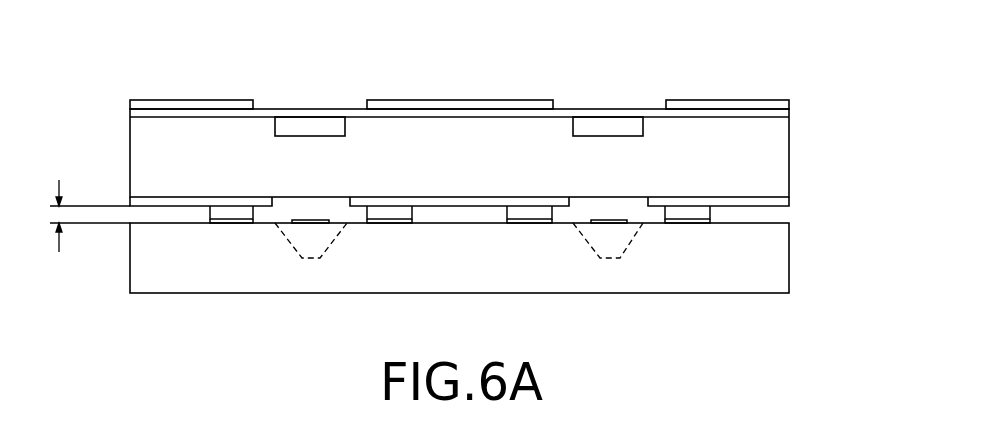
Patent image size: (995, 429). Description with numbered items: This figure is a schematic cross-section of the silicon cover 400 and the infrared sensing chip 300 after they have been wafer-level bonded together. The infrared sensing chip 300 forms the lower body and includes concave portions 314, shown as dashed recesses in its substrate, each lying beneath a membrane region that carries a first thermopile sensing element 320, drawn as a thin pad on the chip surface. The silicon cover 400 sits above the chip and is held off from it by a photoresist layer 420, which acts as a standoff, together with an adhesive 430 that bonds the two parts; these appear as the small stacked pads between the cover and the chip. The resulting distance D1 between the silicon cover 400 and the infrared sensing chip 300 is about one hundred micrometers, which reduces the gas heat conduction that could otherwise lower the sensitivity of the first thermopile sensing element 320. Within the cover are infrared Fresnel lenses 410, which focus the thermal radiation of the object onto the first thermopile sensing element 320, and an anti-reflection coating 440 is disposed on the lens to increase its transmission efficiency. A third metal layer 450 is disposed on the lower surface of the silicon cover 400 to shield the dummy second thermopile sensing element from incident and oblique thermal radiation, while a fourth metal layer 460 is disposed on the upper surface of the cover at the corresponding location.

The infrared sensing chip 300 is at (782, 263).
The concave portion 314 is at (298, 238).
The first thermopile sensing element 320 is at (303, 220).
The silicon cover 400 is at (782, 152).
The infrared Fresnel lens 410 is at (322, 125).
The photoresist layer 420 is at (210, 212).
The adhesive 430 is at (227, 223).
The anti-reflection coating 440 is at (303, 116).
The third metal layer 450 is at (782, 200).
The fourth metal layer 460 is at (165, 102).
The distance D1 is at (75, 216).